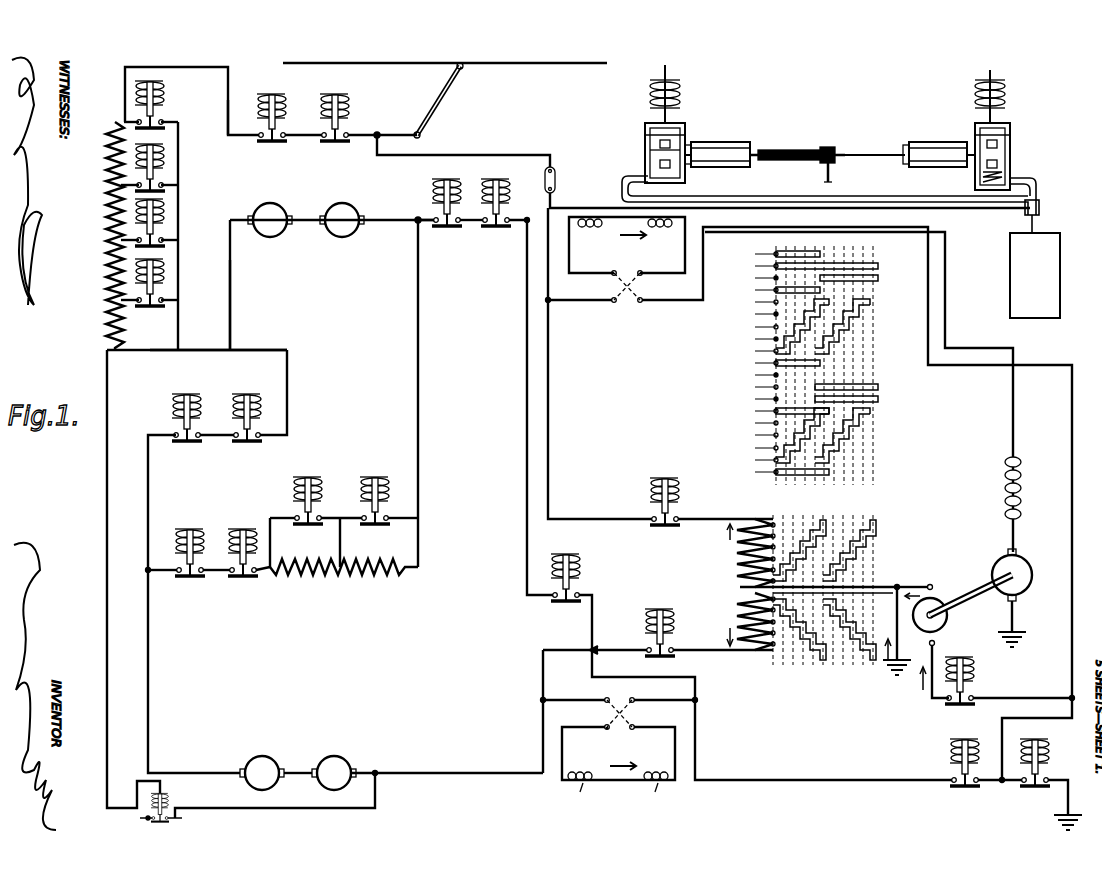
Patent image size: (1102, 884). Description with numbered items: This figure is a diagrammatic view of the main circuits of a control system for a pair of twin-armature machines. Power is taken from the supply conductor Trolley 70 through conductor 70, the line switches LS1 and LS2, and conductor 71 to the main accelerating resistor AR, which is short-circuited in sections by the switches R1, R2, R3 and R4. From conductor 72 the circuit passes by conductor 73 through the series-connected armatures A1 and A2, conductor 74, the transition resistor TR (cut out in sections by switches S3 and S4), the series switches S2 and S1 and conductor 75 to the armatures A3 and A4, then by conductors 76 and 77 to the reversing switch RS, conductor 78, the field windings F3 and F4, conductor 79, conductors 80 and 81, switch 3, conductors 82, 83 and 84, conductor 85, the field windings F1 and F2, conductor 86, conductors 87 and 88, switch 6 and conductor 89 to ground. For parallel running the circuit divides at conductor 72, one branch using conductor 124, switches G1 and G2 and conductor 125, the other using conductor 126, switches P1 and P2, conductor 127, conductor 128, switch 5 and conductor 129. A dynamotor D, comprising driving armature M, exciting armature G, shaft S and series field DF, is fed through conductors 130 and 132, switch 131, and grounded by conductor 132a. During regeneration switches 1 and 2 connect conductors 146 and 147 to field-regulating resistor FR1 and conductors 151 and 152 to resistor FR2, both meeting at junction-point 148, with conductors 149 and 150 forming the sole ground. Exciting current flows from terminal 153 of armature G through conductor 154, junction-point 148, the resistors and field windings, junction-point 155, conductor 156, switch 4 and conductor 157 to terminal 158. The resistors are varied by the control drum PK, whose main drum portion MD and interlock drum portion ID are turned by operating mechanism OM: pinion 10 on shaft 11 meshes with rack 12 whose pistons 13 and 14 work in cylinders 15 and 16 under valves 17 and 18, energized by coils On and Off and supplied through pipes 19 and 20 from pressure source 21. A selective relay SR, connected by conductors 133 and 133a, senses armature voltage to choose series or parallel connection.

The switch 1 is at (668, 516).
The switch 2 is at (663, 647).
The switch 3 is at (560, 590).
The switch 4 is at (963, 695).
The switch 5 is at (968, 777).
The switch 6 is at (1038, 777).
The pinion member 10 is at (829, 146).
The shaft 11 is at (832, 176).
The rack member 12 is at (790, 150).
The piston 13 is at (698, 145).
The piston 14 is at (918, 145).
The cylinder 15 is at (731, 143).
The cylinder 16 is at (940, 143).
The valve 17 is at (645, 153).
The valve 18 is at (1010, 153).
The pipe 19 is at (752, 198).
The pipe 20 is at (1040, 198).
The source of fluid pressure 21 is at (1035, 275).
The conductor 70 is at (396, 136).
The conductor 71 is at (229, 119).
The conductor 72 is at (195, 350).
The conductor 73 is at (231, 313).
The conductor 74 is at (417, 283).
The conductor 75 is at (149, 645).
The conductor 76 is at (455, 772).
The conductor 77 is at (574, 690).
The conductor 78 is at (596, 729).
The conductor 79 is at (675, 748).
The conductor 80 is at (680, 707).
The conductor 81 is at (684, 682).
The conductor 82 is at (528, 540).
The conductor 83 is at (529, 299).
The conductor 84 is at (588, 302).
The conductor 85 is at (599, 264).
The conductor 86 is at (653, 264).
The conductor 87 is at (696, 302).
The conductor 88 is at (1060, 728).
The conductor 89 is at (1066, 806).
The conductor 124 is at (430, 211).
The conductor 125 is at (508, 219).
The conductor 126 is at (270, 343).
The conductor 127 is at (149, 471).
The conductor 128 is at (696, 748).
The conductor 129 is at (998, 784).
The conductor 130 is at (410, 158).
The switch 131 is at (556, 176).
The conductor 132 is at (600, 205).
The conductor 132a is at (1022, 655).
The conductor 133 is at (106, 520).
The conductor 133a is at (262, 808).
The conductor 146 is at (549, 356).
The conductor 147 is at (730, 518).
The junction-point 148 is at (740, 587).
The conductor 149 is at (892, 586).
The conductor 150 is at (897, 630).
The conductor 151 is at (542, 676).
The conductor 152 is at (735, 652).
The terminal 153 is at (963, 600).
The conductor 154 is at (928, 585).
The junction-point 155 is at (1066, 697).
The conductor 156 is at (1003, 692).
The conductor 157 is at (905, 680).
The terminal 158 is at (936, 643).
The main accelerating resistor AR is at (106, 242).
The switch R1 is at (160, 294).
The switch R2 is at (160, 234).
The switch R3 is at (160, 179).
The switch R4 is at (160, 116).
The main-circuit switch LS1 is at (343, 132).
The main-circuit switch LS2 is at (280, 132).
The main armature A1 is at (305, 200).
The main armature A2 is at (342, 220).
The main armature A3 is at (302, 755).
The main armature A4 is at (334, 773).
The main-circuit switch G1 is at (447, 215).
The main-circuit switch G2 is at (496, 215).
The main field winding F1 is at (598, 245).
The main field winding F2 is at (652, 245).
The main field winding F3 is at (590, 769).
The main field winding F4 is at (642, 769).
The reversing switch RS is at (626, 302).
The interlock drum portion ID is at (856, 359).
The control drum PK is at (906, 482).
The main drum portion MD is at (852, 583).
The field-regulating resistor FR1 is at (738, 532).
The field-regulating resistor FR2 is at (738, 612).
The field-magnet winding DF is at (1025, 503).
The driving armature winding M is at (1029, 562).
The dynamotor D is at (971, 583).
The exciting armature winding G is at (923, 612).
The shaft S is at (987, 607).
The main-circuit switch P1 is at (250, 432).
The main-circuit switch P2 is at (190, 432).
The main-circuit switch S1 is at (190, 565).
The main-circuit switch S2 is at (243, 565).
The switch S3 is at (311, 515).
The switch S4 is at (378, 515).
The transition resistor TR is at (372, 578).
The selective relay SR is at (174, 796).
The actuating coil On is at (650, 93).
The actuating coil Off is at (1005, 96).
The operating mechanism OM is at (830, 132).
The supply-circuit conductor Trolley is at (530, 66).